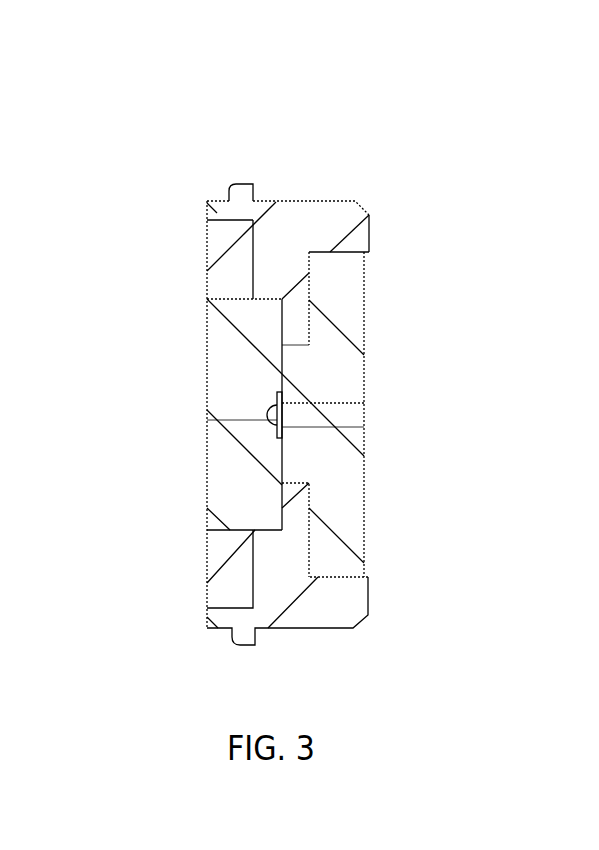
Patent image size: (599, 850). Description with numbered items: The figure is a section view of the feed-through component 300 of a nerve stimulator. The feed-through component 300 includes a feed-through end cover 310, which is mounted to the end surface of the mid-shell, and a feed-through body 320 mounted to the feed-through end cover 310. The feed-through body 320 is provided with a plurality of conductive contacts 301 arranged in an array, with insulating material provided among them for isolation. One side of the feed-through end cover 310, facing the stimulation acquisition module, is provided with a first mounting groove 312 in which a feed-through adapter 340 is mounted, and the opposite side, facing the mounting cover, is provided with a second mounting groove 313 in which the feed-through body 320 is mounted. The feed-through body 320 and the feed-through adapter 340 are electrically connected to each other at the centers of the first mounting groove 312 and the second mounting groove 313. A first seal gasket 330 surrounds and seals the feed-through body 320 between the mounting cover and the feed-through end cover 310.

The feed-through component 300 is at (203, 138).
The feed-through end cover 310 is at (280, 234).
The first seal gasket 330 is at (217, 235).
The second mounting groove 313 is at (253, 266).
The first mounting groove 312 is at (310, 259).
The feed-through adapter 340 is at (333, 370).
The feed-through body 320 is at (227, 479).
The conductive contact 301 is at (280, 410).